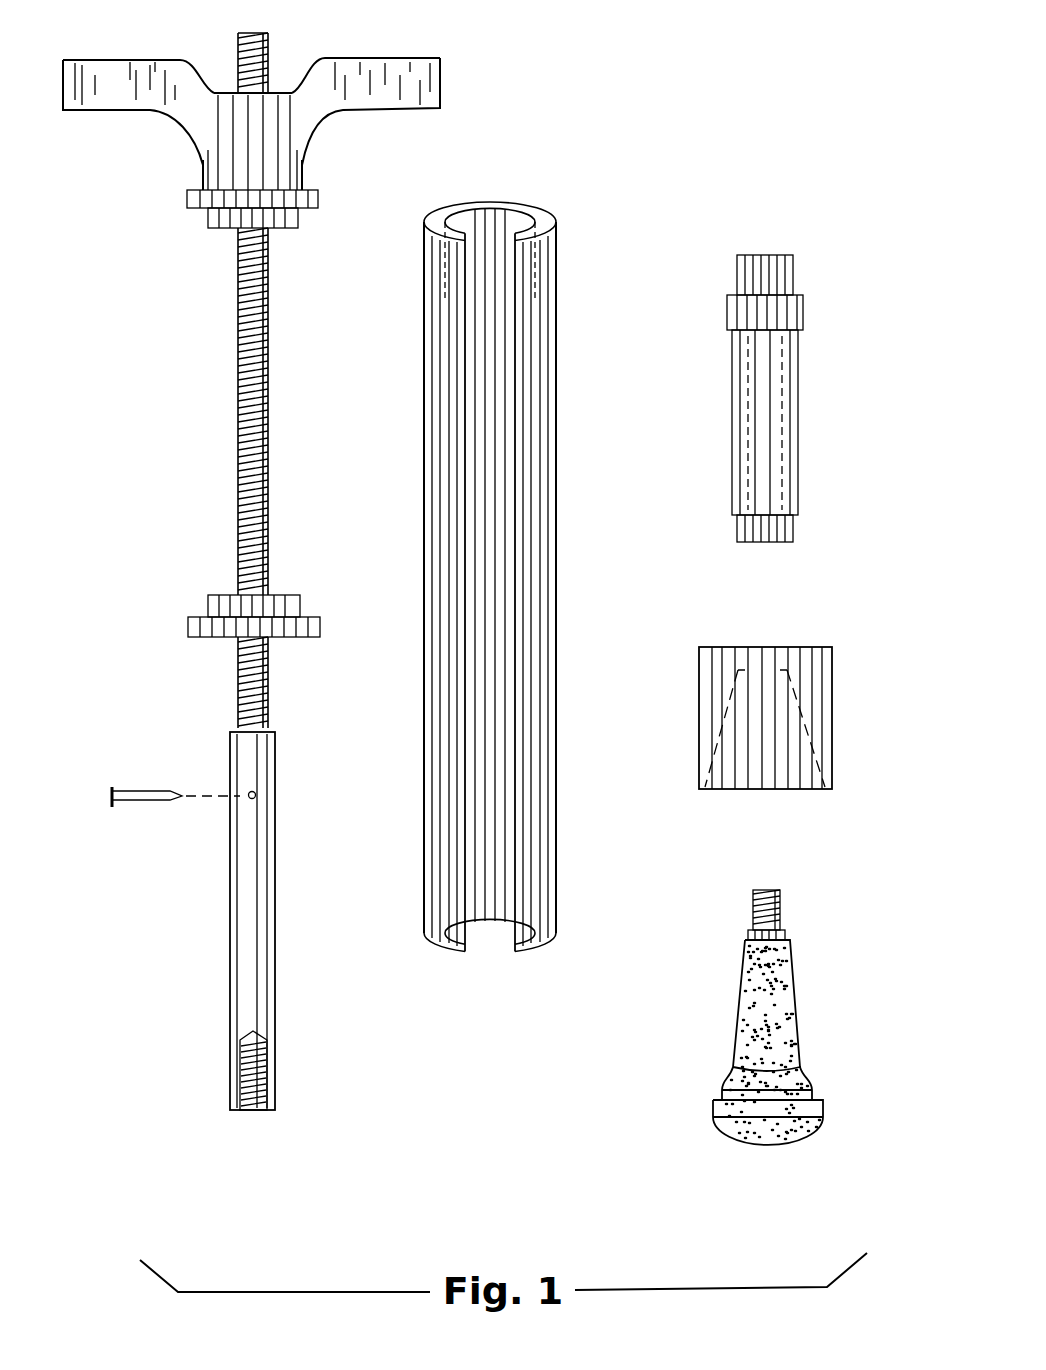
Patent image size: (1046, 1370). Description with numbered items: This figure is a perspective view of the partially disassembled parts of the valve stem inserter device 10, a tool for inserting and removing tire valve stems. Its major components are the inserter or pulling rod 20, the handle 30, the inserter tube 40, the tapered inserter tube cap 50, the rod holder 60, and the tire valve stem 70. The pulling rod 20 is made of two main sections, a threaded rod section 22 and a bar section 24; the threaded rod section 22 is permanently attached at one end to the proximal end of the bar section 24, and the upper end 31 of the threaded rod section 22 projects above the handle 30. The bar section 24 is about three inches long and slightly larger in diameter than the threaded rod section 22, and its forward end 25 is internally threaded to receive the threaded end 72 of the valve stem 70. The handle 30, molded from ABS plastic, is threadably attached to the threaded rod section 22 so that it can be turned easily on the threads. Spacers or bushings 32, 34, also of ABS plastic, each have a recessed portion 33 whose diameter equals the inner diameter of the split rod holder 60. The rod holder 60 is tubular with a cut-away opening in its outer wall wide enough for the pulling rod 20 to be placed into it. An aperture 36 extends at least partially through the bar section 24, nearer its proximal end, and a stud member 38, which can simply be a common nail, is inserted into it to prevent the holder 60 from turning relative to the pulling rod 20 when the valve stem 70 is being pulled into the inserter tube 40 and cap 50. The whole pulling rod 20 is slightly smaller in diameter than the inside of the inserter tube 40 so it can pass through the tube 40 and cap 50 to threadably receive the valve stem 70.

The valve stem inserter device 10 is at (575, 129).
The pulling rod 20 is at (210, 480).
The threaded rod section 22 is at (238, 382).
The bar section 24 is at (237, 895).
The forward end 25 is at (243, 1068).
The handle 30 is at (360, 57).
The upper threaded end of rod 31 is at (237, 62).
The spacer or bushing 32 is at (190, 200).
The recessed portion 33 is at (213, 218).
The spacer or bushing 34 is at (188, 627).
The aperture 36 is at (253, 800).
The stud member 38 is at (152, 790).
The inserter tube 40 is at (738, 405).
The tapered inserter tube cap 50 is at (708, 712).
The rod holder 60 is at (555, 655).
The tire valve stem 70 is at (752, 1017).
The threaded end 72 is at (780, 903).